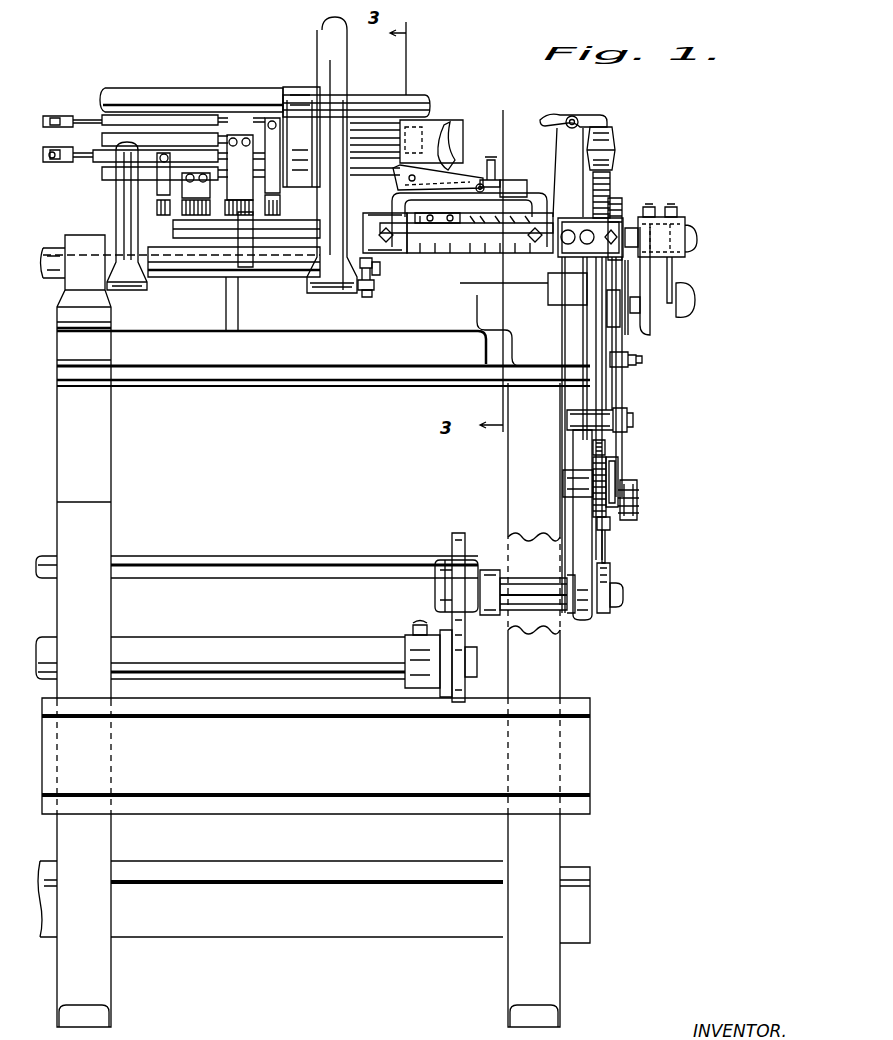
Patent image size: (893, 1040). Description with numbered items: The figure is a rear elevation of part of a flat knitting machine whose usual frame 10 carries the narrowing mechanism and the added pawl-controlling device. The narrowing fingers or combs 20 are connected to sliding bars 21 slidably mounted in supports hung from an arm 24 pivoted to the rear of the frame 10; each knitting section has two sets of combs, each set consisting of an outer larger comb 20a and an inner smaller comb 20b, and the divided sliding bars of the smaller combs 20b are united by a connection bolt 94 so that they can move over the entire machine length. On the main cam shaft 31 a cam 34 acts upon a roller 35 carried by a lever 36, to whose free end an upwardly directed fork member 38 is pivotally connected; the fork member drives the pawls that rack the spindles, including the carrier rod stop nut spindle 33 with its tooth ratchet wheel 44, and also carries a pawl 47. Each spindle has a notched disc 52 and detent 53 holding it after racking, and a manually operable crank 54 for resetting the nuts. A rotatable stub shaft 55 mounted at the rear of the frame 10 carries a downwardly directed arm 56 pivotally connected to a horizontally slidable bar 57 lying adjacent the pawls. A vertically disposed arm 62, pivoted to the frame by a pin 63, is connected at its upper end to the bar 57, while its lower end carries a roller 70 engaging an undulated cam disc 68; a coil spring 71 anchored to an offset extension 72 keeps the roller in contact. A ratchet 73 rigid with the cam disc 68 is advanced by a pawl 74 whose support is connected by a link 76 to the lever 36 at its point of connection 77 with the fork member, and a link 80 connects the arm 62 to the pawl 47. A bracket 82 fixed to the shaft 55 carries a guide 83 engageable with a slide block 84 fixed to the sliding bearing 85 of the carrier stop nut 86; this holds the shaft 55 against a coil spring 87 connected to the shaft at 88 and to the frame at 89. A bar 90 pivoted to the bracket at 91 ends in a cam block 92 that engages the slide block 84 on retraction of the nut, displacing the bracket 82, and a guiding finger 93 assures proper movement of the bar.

The machine frame 10 is at (100, 458).
The narrowing fingers or combs 20 is at (290, 209).
The outer larger comb 20a is at (195, 177).
The inner smaller comb 20b is at (265, 137).
The sliding bar 21 is at (155, 138).
The arm 24 is at (322, 45).
The main cam shaft 31 is at (275, 650).
The carrier rod stop nut spindle 33 is at (548, 290).
The cam 34 is at (450, 632).
The roller 35 is at (445, 535).
The lever 36 is at (482, 572).
The fork member 38 is at (580, 548).
The tooth ratchet wheel 44 is at (620, 200).
The pawl 47 is at (605, 382).
The notched disc 52 is at (610, 170).
The detent 53 is at (612, 140).
The manually operable crank 54 is at (668, 280).
The rotatable stub shaft 55 is at (297, 232).
The downwardly directed arm 56 is at (668, 330).
The horizontally slidable bar 57 is at (648, 335).
The vertically disposed arm 62 is at (623, 390).
The pin 63 is at (568, 415).
The undulated cam disc 68 is at (670, 455).
The roller 70 is at (610, 472).
The coil spring 71 is at (637, 510).
The offset extension 72 is at (622, 520).
The ratchet 73 is at (575, 470).
The pawl 74 is at (593, 448).
The link 76 is at (610, 568).
The point of connection 77 is at (610, 612).
The link 80 is at (630, 367).
The bracket 82 is at (540, 205).
The guide 83 is at (525, 180).
The slide block 84 is at (440, 225).
The sliding bearing 85 is at (455, 253).
The carrier stop nut 86 is at (450, 122).
The coil spring 87 is at (375, 282).
The spring connection on shaft 88 is at (378, 280).
The spring connection on frame 89 is at (362, 298).
The bar 90 is at (482, 183).
The pivotal connection 91 is at (500, 165).
The cam block 92 is at (395, 178).
The guiding finger 93 is at (450, 156).
The connection bolt 94 is at (83, 135).